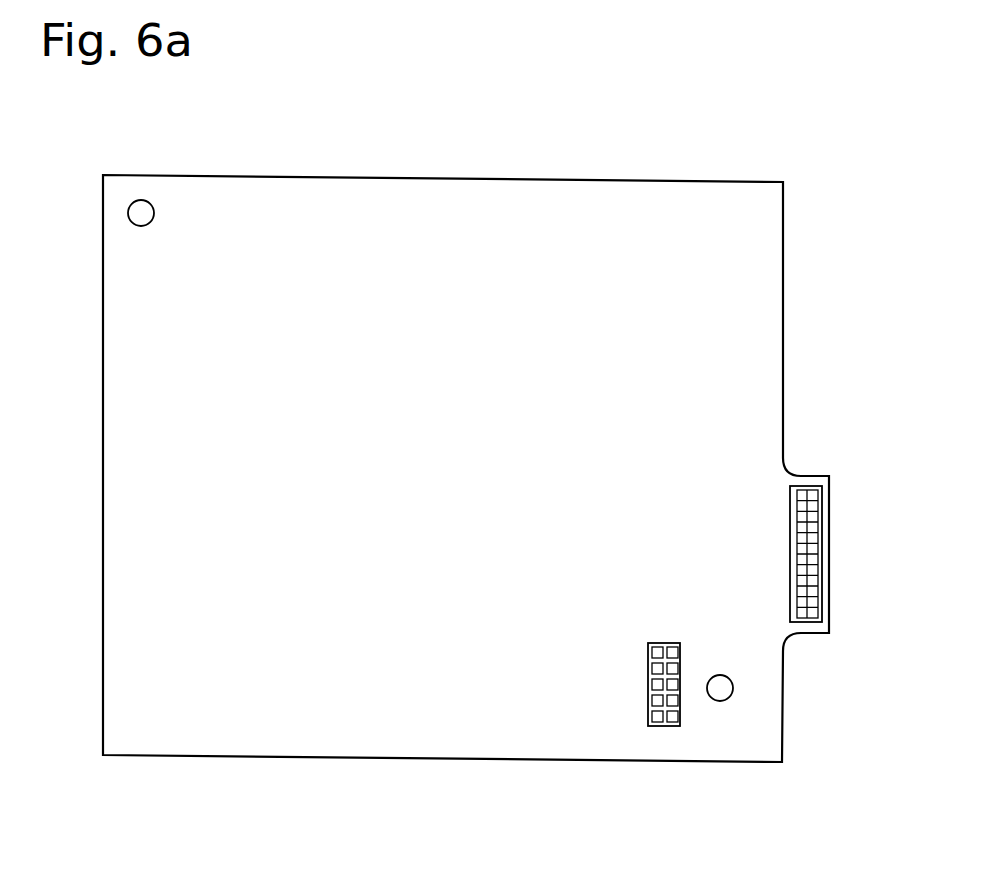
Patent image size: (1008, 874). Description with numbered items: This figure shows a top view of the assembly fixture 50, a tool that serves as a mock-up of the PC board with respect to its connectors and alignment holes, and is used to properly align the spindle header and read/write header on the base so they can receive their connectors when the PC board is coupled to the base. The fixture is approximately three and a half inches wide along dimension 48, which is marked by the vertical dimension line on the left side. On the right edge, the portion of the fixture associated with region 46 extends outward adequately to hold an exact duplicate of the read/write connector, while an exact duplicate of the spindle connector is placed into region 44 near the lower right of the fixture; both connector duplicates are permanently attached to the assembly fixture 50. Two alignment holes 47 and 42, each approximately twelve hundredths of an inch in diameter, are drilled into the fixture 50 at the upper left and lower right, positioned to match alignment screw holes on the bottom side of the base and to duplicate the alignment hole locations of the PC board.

The assembly fixture 50 is at (465, 167).
The alignment hole 47 is at (133, 201).
The dimension 48 is at (60, 175).
The region 46 is at (822, 532).
The region 44 is at (670, 727).
The alignment hole 42 is at (731, 697).